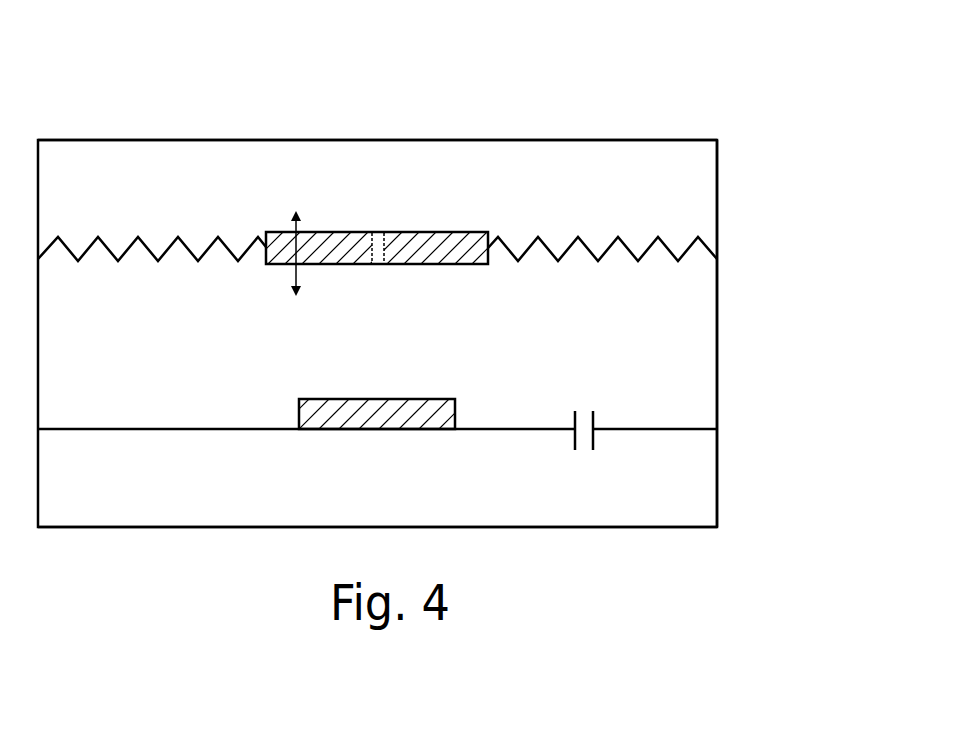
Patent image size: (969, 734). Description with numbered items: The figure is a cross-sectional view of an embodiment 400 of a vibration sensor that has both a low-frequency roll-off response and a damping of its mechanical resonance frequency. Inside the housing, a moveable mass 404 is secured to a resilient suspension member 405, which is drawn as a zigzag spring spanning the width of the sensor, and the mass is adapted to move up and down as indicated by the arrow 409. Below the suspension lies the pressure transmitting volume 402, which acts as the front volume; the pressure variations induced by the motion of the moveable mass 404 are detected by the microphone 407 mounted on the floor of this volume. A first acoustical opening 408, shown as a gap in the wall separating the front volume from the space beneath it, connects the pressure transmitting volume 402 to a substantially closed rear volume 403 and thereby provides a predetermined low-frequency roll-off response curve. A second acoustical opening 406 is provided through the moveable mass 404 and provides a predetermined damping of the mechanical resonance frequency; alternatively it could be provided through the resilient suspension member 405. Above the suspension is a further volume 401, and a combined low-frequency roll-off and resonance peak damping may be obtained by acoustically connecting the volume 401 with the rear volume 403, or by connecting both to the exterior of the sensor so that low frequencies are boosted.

The embodiment 400 is at (751, 96).
The volume 401 is at (702, 190).
The pressure transmitting volume 402 is at (702, 295).
The substantially closed rear volume 403 is at (700, 473).
The moveable mass 404 is at (446, 240).
The resilient suspension member 405 is at (580, 248).
The second acoustical opening 406 is at (376, 232).
The microphone 407 is at (366, 405).
The first acoustical opening 408 is at (584, 415).
The arrow 409 is at (296, 270).